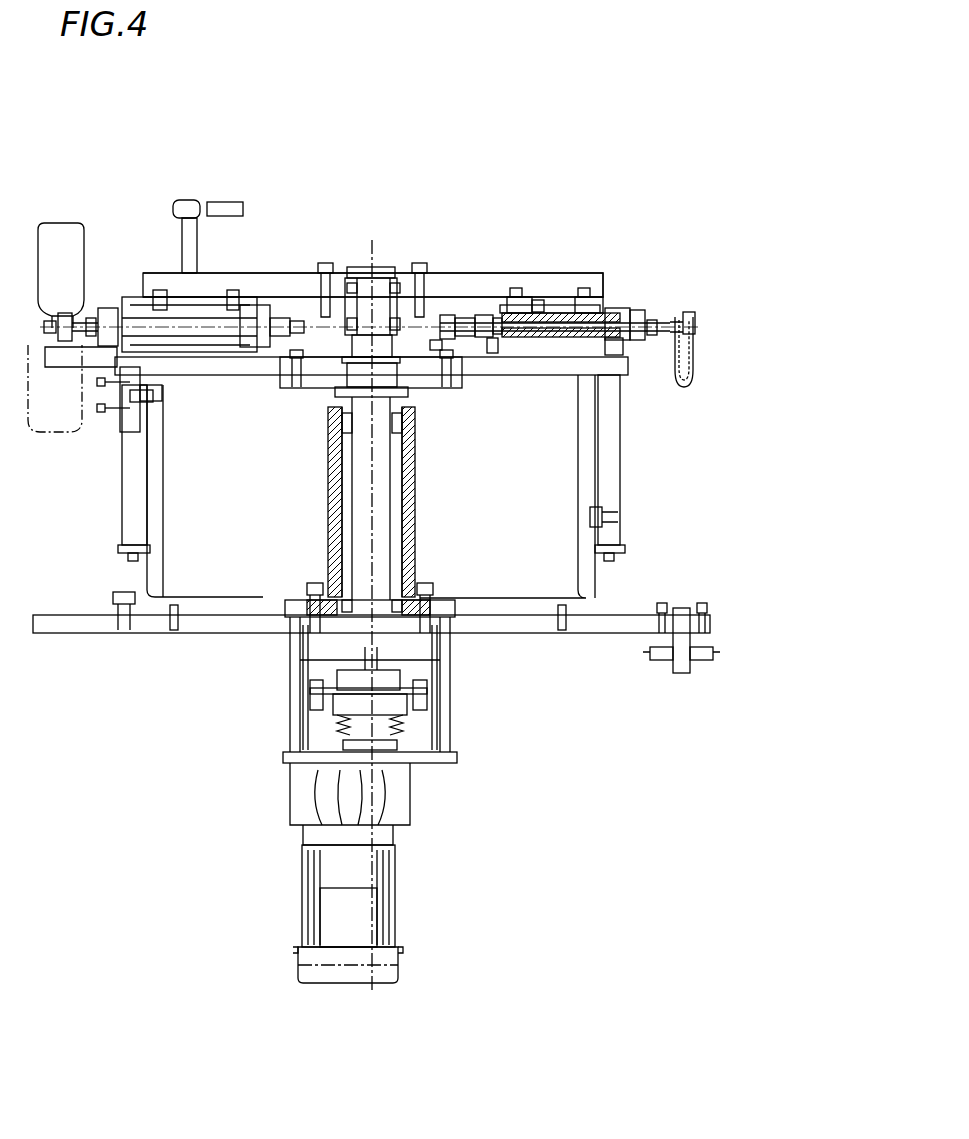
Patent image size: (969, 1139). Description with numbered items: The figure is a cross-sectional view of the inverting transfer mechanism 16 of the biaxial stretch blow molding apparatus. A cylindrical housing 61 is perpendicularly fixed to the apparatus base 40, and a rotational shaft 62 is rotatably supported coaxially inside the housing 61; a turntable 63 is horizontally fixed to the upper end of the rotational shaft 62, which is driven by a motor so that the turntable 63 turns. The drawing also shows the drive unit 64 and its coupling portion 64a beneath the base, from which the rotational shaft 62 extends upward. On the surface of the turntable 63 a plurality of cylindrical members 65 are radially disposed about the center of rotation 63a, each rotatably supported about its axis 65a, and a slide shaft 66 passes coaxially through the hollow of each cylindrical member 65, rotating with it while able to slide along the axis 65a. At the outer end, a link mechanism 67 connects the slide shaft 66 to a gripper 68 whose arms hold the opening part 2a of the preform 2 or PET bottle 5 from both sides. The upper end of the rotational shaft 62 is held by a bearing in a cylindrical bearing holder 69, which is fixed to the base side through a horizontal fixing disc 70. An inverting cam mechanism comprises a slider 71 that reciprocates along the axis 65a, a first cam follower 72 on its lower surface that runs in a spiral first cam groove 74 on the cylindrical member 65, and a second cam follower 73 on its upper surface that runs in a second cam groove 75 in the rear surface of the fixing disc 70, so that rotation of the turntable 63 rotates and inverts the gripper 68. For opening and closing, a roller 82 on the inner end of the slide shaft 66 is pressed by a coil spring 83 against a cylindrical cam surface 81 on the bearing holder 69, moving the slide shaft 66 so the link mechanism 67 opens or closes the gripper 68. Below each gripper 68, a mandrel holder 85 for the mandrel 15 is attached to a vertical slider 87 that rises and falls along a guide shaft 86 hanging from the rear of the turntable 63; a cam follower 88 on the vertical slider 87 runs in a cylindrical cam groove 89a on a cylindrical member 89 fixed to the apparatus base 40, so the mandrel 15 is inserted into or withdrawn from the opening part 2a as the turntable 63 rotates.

The inverting transfer mechanism 16 is at (667, 243).
The PET bottle 5 is at (85, 243).
The opening part 2a is at (82, 308).
The preform 2 is at (694, 357).
The mandrel 15 is at (50, 348).
The mandrel holder 85 is at (55, 420).
The guide shaft 86 is at (128, 495).
The vertical slider 87 is at (100, 412).
The cam follower 88 is at (150, 410).
The cylindrical member 89 is at (160, 550).
The cylindrical cam groove 89a is at (160, 392).
The apparatus base 40 is at (205, 625).
The cylindrical housing 61 is at (410, 516).
The rotational shaft 62 is at (380, 505).
The turntable 63 is at (515, 368).
The center of rotation 63a is at (368, 455).
The drive motor 64 is at (300, 883).
The reduction gear 64a is at (330, 792).
The cylindrical member 65 is at (575, 337).
The axis 65a is at (628, 310).
The slide shaft 66 is at (553, 330).
The link mechanism 67 is at (650, 333).
The gripper 68 is at (692, 338).
The bearing holder 69 is at (430, 303).
The horizontal fixing disc 70 is at (473, 282).
The slider 71 is at (536, 303).
The first cam follower 72 is at (560, 285).
The second cam follower 73 is at (520, 300).
The first cam groove 74 is at (498, 335).
The second cam groove 75 is at (497, 292).
The cylindrical cam surface 81 is at (432, 337).
The roller 82 is at (447, 330).
The coil spring 83 is at (460, 338).